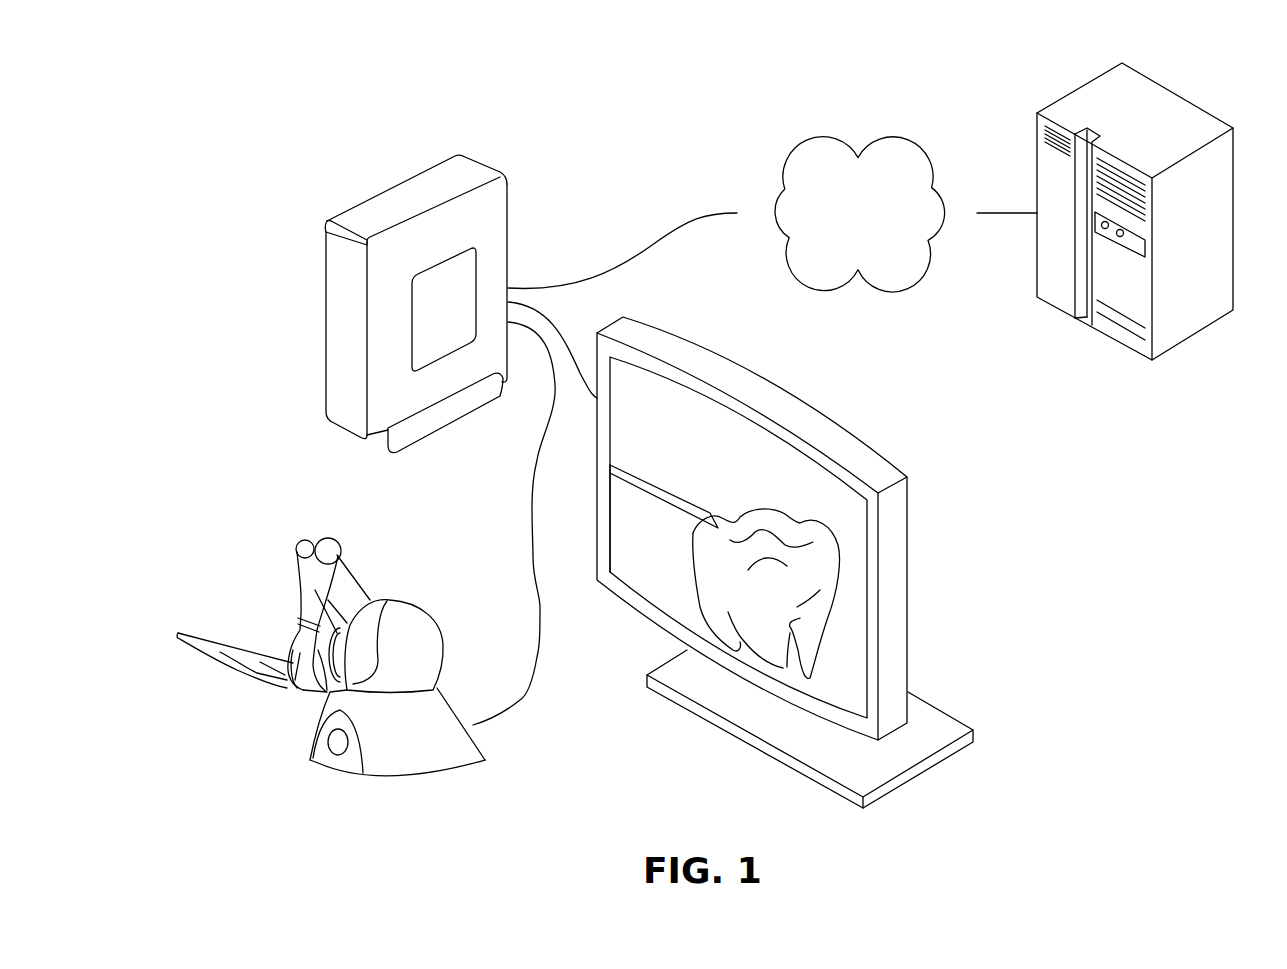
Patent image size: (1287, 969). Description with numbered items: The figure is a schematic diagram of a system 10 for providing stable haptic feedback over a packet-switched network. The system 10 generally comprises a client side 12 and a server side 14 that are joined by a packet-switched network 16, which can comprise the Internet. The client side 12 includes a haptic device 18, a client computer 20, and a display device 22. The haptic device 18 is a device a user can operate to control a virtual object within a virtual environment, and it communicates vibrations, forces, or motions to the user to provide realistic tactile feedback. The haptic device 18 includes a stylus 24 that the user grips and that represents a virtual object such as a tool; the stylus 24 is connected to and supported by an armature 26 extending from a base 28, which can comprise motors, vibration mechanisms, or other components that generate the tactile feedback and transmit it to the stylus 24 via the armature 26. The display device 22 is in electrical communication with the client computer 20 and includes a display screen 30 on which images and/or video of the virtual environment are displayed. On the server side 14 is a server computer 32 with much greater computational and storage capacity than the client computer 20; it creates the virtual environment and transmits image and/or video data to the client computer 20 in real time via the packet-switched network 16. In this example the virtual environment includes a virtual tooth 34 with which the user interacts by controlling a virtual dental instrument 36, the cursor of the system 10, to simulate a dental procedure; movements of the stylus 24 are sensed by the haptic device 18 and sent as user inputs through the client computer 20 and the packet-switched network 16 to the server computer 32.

The system 10 is at (210, 96).
The client side 12 is at (574, 157).
The server side 14 is at (1041, 463).
The packet-switched network 16 is at (906, 214).
The haptic device 18 is at (237, 561).
The client computer 20 is at (321, 202).
The display device 22 is at (887, 424).
The stylus 24 is at (260, 673).
The armature 26 is at (359, 572).
The base 28 is at (454, 791).
The display screen 30 is at (632, 563).
The server computer 32 is at (1094, 356).
The virtual tooth 34 is at (705, 552).
The virtual dental instrument 36 is at (652, 486).